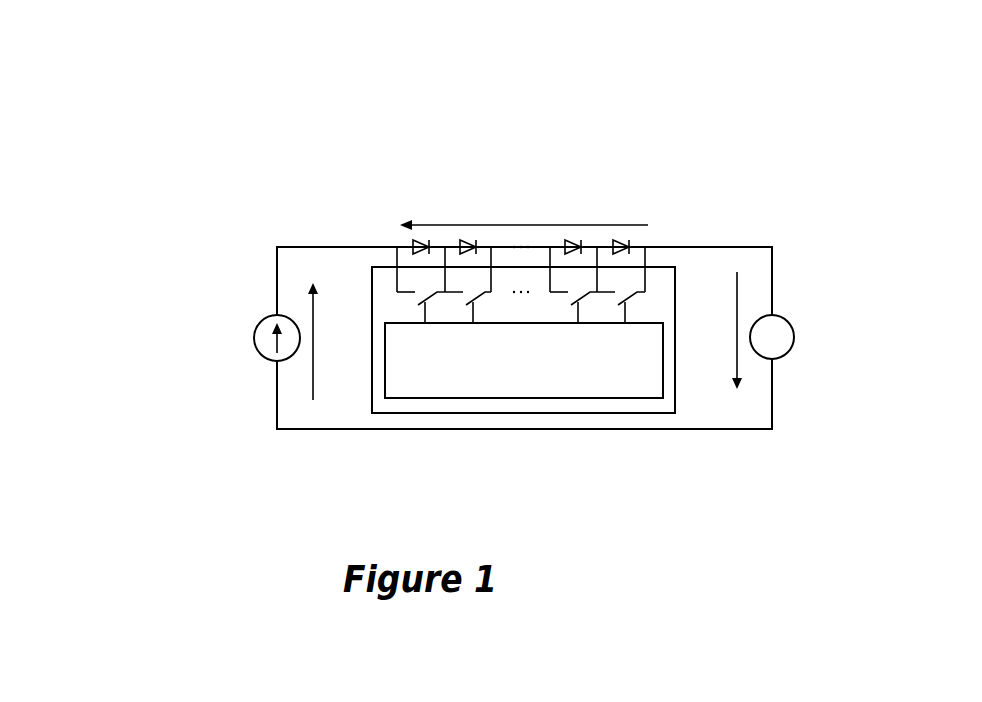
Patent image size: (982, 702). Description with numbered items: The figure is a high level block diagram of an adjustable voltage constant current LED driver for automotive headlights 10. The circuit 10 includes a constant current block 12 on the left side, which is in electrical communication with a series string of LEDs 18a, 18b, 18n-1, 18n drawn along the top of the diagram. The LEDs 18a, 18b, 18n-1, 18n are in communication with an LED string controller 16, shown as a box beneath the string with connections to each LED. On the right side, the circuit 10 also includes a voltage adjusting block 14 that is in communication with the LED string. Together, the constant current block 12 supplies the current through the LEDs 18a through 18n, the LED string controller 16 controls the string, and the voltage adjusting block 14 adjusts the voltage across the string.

The adjustable voltage constant current LED driver 10 is at (488, 256).
The constant current block 12 is at (162, 303).
The voltage adjusting block 14 is at (850, 301).
The LED string controller 16 is at (523, 380).
The LED 18a is at (406, 212).
The LED 18b is at (466, 212).
The LED 18n-1 is at (572, 212).
The LED 18n is at (640, 212).